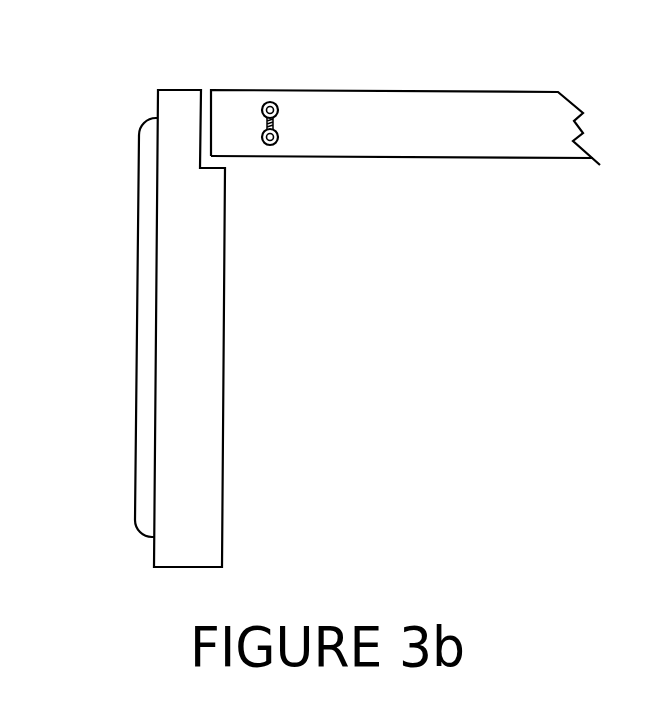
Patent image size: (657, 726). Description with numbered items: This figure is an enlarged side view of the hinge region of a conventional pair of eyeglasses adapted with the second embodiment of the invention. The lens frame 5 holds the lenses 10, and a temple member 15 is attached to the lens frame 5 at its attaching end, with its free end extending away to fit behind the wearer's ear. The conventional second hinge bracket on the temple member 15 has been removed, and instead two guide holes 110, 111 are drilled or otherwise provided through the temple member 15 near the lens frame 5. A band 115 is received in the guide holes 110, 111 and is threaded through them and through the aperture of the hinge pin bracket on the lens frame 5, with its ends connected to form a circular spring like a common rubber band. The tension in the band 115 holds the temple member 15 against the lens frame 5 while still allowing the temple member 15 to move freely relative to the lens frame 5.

The lens frame 5 is at (222, 303).
The lenses 10 is at (137, 413).
The temple member 15 is at (459, 92).
The guide hole 110 is at (271, 102).
The guide hole 111 is at (270, 145).
The band 115 is at (275, 125).